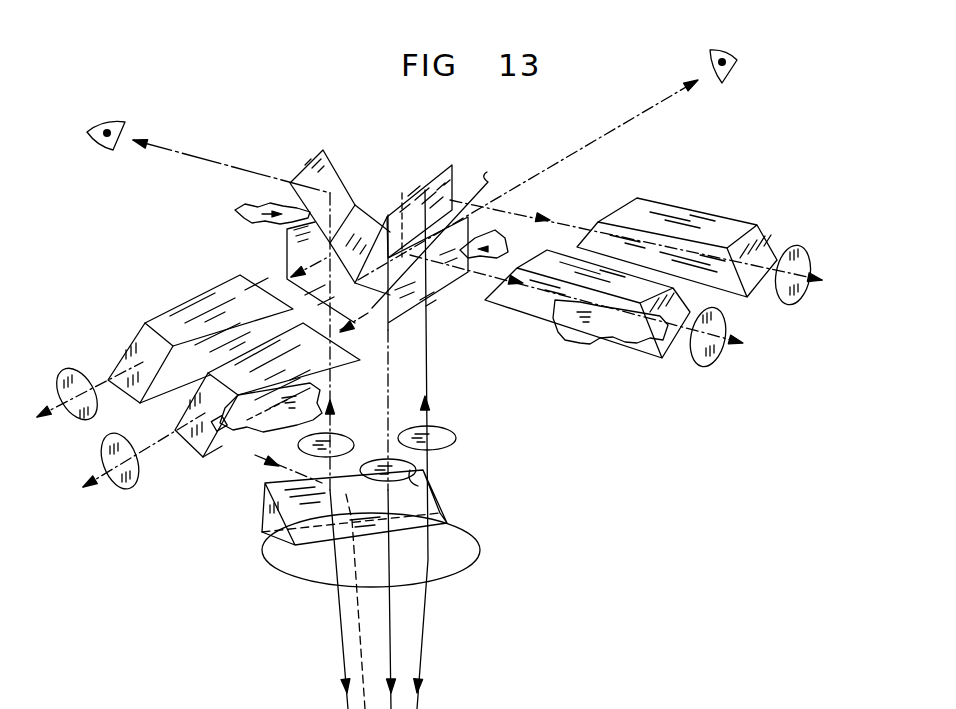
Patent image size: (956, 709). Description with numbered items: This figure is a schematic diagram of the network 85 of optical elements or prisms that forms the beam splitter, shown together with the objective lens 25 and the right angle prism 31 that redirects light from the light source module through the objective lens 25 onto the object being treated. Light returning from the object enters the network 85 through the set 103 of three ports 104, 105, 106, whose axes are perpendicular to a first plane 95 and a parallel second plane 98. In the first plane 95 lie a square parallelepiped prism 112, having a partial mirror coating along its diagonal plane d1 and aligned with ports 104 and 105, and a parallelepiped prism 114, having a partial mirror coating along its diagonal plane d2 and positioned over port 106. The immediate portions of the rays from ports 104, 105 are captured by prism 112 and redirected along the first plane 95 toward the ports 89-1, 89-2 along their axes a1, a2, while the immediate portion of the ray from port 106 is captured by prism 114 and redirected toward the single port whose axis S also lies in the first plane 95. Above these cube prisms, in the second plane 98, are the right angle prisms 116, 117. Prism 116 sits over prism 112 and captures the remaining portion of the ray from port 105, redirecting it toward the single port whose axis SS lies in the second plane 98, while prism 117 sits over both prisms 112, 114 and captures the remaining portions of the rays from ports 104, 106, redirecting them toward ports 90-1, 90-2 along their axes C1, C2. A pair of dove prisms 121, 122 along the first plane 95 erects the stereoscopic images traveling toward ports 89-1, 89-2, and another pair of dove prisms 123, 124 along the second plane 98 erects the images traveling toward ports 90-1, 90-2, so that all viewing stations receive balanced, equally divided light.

The objective lens 25 is at (463, 553).
The right angle prism 31 is at (263, 513).
The network of optical elements or prisms 85 is at (547, 427).
The port 89-1 is at (63, 372).
The port 89-2 is at (140, 482).
The port 90-1 is at (712, 355).
The port 90-2 is at (806, 297).
The first plane 95 is at (503, 240).
The second plane 98 is at (242, 212).
The set of three ports 103 is at (507, 458).
The port 104 is at (437, 493).
The port 105 is at (343, 438).
The port 106 is at (453, 427).
The square parallelepiped prism 112 is at (293, 255).
The parallelepiped prism 114 is at (443, 272).
The right angle prism 116 is at (369, 163).
The right angle prism 117 is at (432, 185).
The dove prism 121 is at (175, 428).
The dove prism 122 is at (213, 297).
The dove prism 123 is at (535, 308).
The dove prism 124 is at (735, 182).
The axis of single port S is at (597, 137).
The axis of single port SS is at (268, 163).
The axis of port a1 is at (155, 447).
The axis of port a2 is at (103, 378).
The axis of port C1 is at (667, 367).
The axis of port C2 is at (775, 252).
The diagonal plane d1 is at (413, 322).
The diagonal plane d2 is at (438, 231).